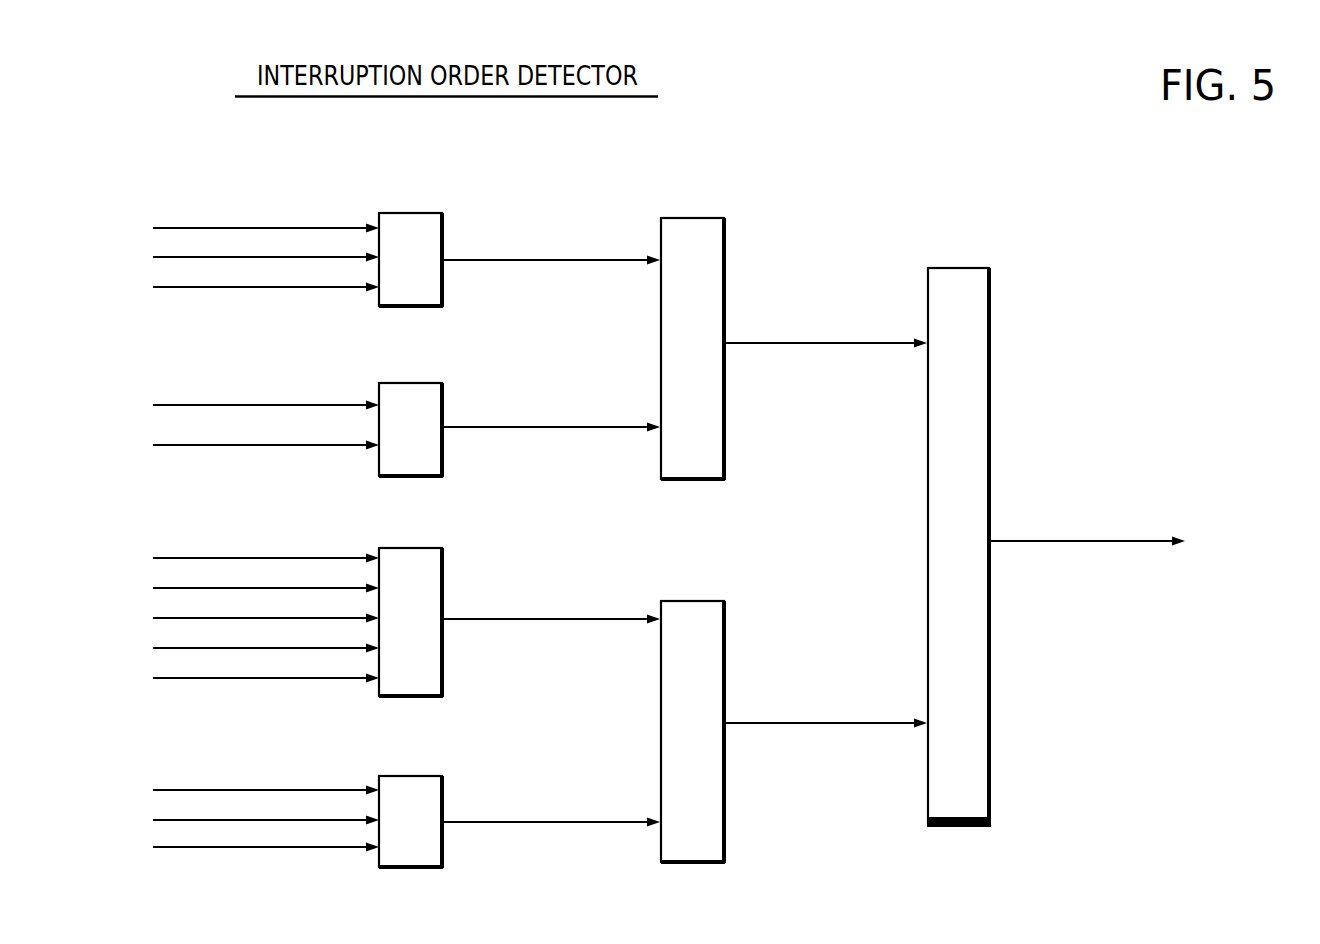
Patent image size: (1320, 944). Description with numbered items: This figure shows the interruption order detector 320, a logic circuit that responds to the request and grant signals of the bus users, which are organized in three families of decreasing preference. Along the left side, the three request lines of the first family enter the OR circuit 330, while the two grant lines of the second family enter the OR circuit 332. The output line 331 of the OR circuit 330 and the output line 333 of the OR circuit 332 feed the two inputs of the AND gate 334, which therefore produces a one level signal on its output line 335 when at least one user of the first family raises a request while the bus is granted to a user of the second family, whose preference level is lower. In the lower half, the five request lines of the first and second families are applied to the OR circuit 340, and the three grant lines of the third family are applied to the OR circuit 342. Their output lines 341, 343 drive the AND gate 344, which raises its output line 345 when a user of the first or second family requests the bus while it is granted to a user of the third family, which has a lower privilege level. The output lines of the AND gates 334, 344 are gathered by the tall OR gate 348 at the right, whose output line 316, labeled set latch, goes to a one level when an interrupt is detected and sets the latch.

The interruption order detector 320 is at (866, 192).
The OR circuit 330 is at (418, 212).
The output line 331 is at (523, 260).
The OR circuit 332 is at (418, 382).
The output line 333 is at (523, 427).
The AND gate 334 is at (700, 217).
The output line 335 is at (807, 342).
The OR circuit 340 is at (418, 547).
The output line 341 is at (523, 619).
The OR circuit 342 is at (418, 775).
The output line 343 is at (523, 822).
The AND gate 344 is at (700, 600).
The output line 345 is at (805, 722).
The OR gate 348 is at (960, 267).
The output line 316 is at (1075, 546).